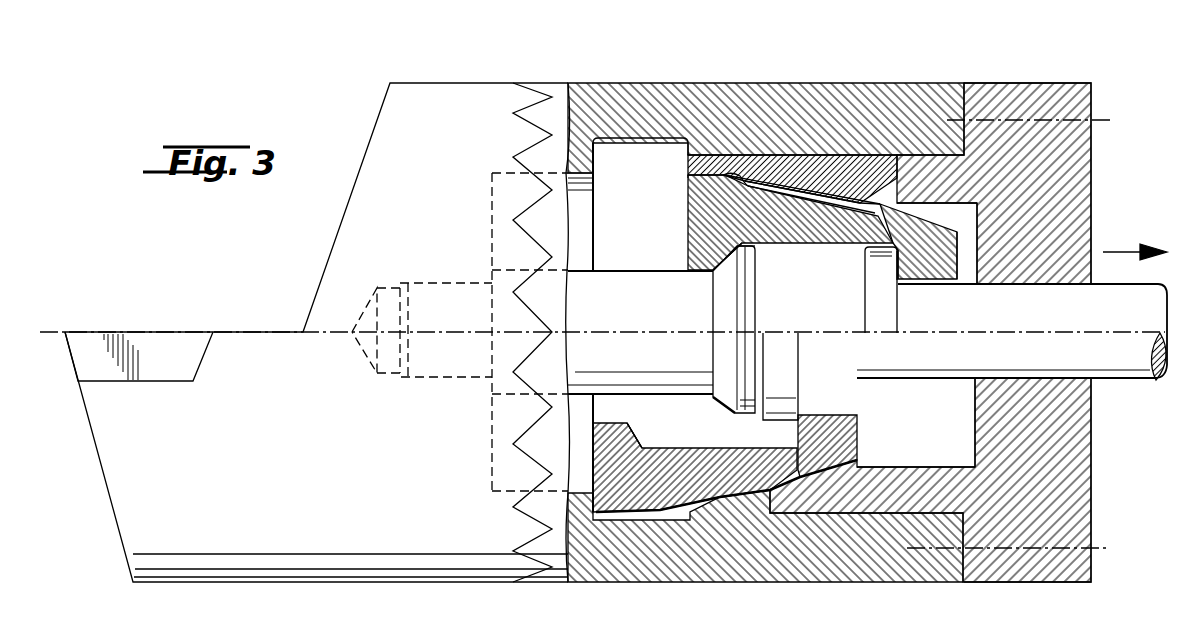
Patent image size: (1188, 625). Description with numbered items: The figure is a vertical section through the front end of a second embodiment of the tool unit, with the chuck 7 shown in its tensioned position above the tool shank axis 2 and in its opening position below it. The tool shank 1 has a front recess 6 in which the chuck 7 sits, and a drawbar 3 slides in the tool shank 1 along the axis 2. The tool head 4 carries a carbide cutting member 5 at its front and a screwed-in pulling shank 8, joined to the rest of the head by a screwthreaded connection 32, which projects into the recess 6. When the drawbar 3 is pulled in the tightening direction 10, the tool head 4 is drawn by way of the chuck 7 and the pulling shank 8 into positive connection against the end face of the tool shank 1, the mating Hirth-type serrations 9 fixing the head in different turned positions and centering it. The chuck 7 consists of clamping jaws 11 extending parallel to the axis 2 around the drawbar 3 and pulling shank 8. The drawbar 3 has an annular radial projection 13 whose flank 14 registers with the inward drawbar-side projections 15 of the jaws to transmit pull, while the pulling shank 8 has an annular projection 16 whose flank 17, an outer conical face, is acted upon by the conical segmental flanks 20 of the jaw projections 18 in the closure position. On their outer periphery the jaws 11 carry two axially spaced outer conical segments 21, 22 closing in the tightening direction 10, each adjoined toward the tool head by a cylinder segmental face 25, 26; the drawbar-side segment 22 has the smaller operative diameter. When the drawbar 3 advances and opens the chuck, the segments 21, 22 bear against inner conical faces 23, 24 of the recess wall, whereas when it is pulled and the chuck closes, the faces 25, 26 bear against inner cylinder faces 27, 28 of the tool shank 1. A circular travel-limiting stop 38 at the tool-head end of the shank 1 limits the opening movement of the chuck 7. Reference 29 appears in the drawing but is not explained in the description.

The tool shank 1 is at (1036, 83).
The tool shank axis 2 is at (314, 340).
The drawbar 3 is at (1130, 358).
The tool head 4 is at (443, 82).
The cutting member 5 is at (147, 343).
The front recess 6 is at (645, 150).
The chuck 7 is at (688, 205).
The pulling shank 8 is at (610, 282).
The Hirth-type serrations 9 is at (542, 100).
The tightening direction 10 is at (1121, 250).
The clamping jaws 11 is at (889, 214).
The radial projection 13 is at (800, 400).
The flank 14 is at (908, 262).
The drawbar-side projections 15 is at (943, 263).
The projection 16 is at (744, 247).
The flank 17 is at (722, 406).
The pulling-shank side clamping jaw projections 18 is at (700, 257).
The conical segmental flanks 20 is at (722, 262).
The tool-head-side outer conical segment 21 is at (783, 192).
The drawbar-side outer conical segment 22 is at (947, 230).
The inner conical face 23 is at (690, 174).
The inner conical face 24 is at (832, 186).
The cylinder segmental face 25 is at (725, 172).
The cylinder segmental face 26 is at (848, 196).
The inner cylinder face 27 is at (737, 180).
The inner cylinder face 28 is at (940, 205).
The contact surface 29 is at (895, 260).
The screwthreaded connection 32 is at (435, 378).
The travel-limiting stop 38 is at (594, 156).